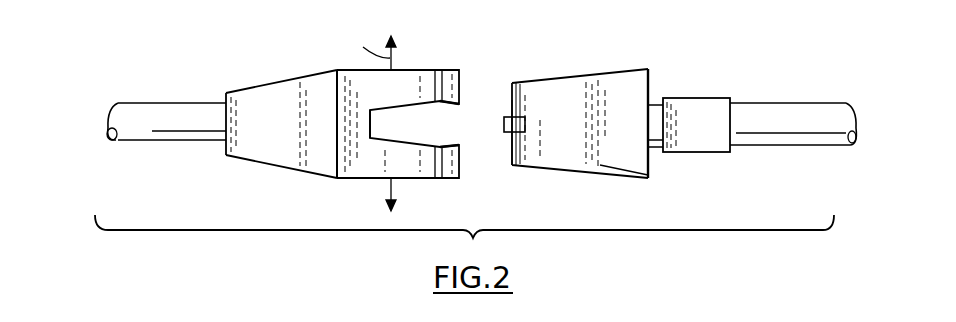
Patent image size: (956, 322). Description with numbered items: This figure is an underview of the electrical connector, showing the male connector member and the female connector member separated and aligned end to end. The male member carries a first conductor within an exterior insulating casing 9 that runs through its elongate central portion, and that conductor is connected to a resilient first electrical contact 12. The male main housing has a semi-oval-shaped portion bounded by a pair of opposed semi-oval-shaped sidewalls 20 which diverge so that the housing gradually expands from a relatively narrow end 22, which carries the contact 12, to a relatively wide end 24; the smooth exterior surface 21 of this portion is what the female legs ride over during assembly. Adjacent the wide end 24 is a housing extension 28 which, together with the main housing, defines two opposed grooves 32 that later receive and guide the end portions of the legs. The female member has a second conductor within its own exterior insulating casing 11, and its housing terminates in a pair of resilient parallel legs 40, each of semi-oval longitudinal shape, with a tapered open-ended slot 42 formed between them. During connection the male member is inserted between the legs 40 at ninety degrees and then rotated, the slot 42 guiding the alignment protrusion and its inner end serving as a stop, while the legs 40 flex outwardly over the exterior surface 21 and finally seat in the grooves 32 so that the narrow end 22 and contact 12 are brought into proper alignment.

The exterior insulating casing 9 is at (775, 146).
The exterior insulating casing 11 is at (162, 141).
The first electrical contact 12 is at (505, 116).
The semi-oval-shaped sidewalls 20 is at (627, 72).
The exterior surface 21 is at (600, 166).
The narrow end 22 is at (517, 156).
The wide end 24 is at (652, 75).
The housing extension 28 is at (724, 150).
The grooves 32 is at (657, 97).
The resilient parallel legs 40 is at (400, 70).
The open-ended slot 42 is at (435, 128).